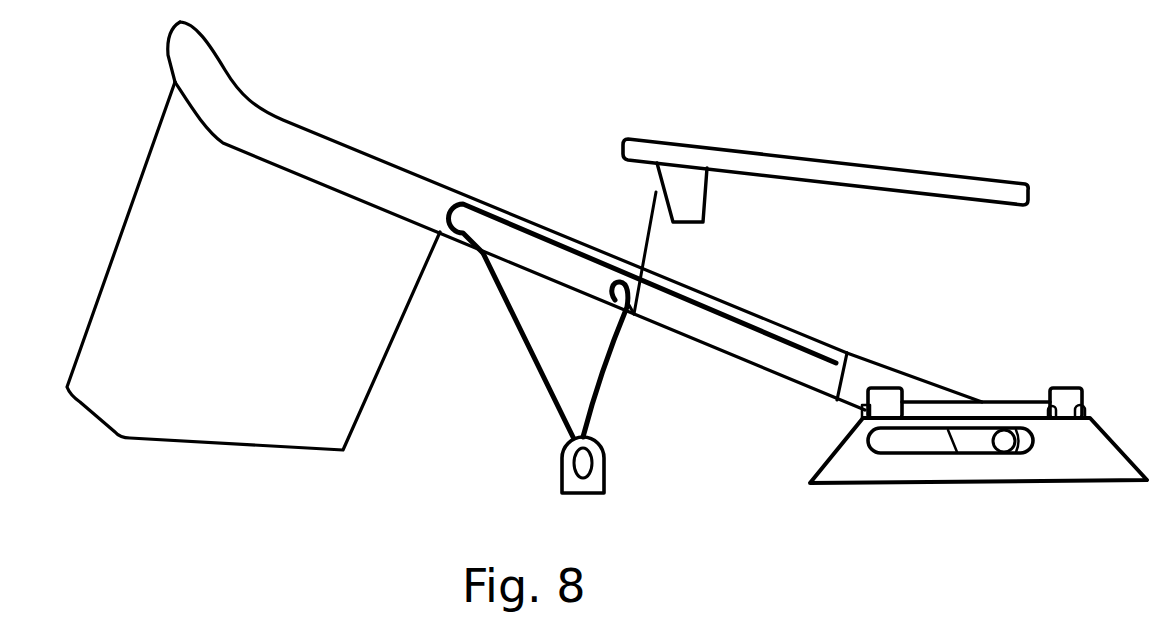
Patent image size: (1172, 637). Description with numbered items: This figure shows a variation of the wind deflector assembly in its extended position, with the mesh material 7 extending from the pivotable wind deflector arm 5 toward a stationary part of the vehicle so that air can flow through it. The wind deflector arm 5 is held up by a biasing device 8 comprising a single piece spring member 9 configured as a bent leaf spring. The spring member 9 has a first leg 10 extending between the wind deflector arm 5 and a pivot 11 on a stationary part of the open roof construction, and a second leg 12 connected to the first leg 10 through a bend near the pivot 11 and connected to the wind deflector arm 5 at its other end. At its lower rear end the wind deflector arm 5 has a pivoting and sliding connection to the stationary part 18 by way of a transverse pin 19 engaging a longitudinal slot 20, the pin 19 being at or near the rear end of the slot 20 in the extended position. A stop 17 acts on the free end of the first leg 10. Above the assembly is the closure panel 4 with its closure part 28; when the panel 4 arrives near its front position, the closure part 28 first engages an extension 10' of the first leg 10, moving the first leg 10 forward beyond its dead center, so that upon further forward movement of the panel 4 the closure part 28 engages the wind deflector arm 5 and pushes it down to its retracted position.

The panel 4 is at (917, 185).
The wind deflector arm 5 is at (350, 170).
The mesh material 7 is at (184, 415).
The biasing device 8 is at (660, 490).
The spring member 9 is at (537, 381).
The first leg 10 is at (640, 359).
The extension of first leg 10' is at (606, 250).
The pivot 11 is at (561, 476).
The second leg 12 is at (513, 323).
The stop 17 is at (640, 302).
The stationary part 18 is at (1090, 462).
The transverse pin 19 is at (1020, 455).
The longitudinal slot 20 is at (915, 447).
The closure part 28 is at (685, 195).